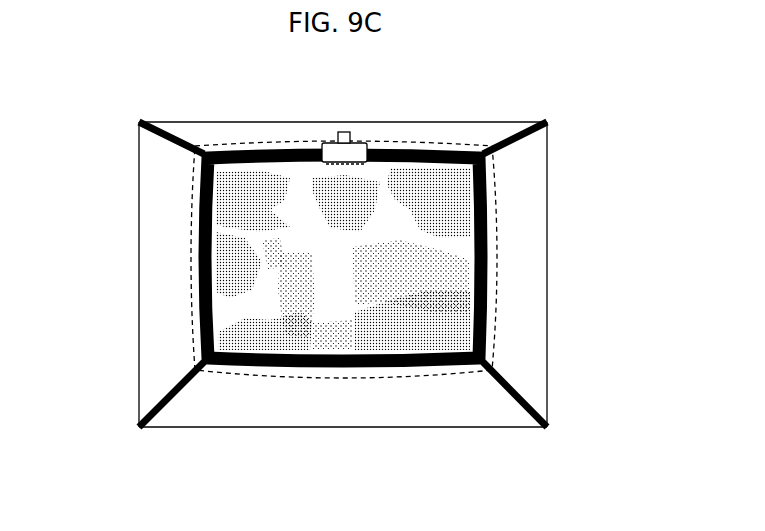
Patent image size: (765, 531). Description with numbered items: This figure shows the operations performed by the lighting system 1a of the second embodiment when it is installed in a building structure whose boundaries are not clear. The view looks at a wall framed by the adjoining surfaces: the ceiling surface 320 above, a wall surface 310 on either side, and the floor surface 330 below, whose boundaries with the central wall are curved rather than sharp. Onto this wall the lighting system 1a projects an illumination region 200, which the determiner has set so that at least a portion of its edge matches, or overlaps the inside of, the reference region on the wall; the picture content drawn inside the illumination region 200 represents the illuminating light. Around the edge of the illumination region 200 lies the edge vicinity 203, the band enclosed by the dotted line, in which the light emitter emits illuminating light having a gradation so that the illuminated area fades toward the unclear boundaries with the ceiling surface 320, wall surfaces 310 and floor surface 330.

The lighting system 1a is at (364, 135).
The ceiling surface 320 is at (420, 138).
The illumination region 200 is at (270, 203).
The wall surface 310 is at (175, 278).
The edge vicinity 203 is at (490, 322).
The floor surface 330 is at (452, 403).